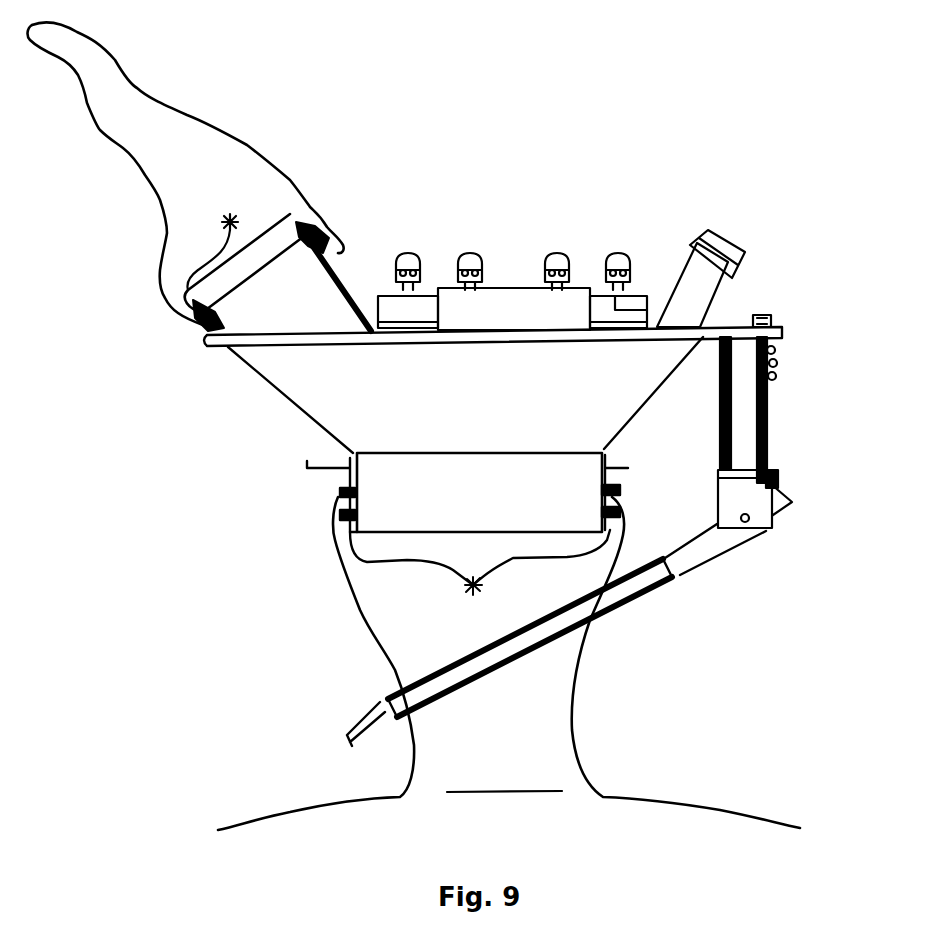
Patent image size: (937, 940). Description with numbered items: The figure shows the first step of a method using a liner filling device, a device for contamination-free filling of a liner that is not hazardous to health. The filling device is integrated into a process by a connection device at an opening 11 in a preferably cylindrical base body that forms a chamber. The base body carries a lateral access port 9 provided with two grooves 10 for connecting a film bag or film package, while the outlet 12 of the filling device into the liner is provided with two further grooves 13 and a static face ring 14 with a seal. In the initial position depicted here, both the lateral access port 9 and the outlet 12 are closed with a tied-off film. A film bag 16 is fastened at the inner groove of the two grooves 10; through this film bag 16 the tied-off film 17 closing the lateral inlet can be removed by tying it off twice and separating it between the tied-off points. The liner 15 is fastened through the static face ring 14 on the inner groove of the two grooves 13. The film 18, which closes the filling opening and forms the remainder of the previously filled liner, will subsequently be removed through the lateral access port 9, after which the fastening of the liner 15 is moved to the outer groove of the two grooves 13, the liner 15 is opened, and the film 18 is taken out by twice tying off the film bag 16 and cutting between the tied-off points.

The lateral access port 9 is at (343, 287).
The grooves 10 is at (330, 224).
The opening 11 is at (508, 282).
The outlet 12 is at (387, 540).
The grooves 13 is at (323, 517).
The static face ring 14 is at (683, 570).
The liner 15 is at (580, 737).
The film bag 16 is at (137, 88).
The tied-off film 17 is at (257, 245).
The film 18 is at (410, 562).